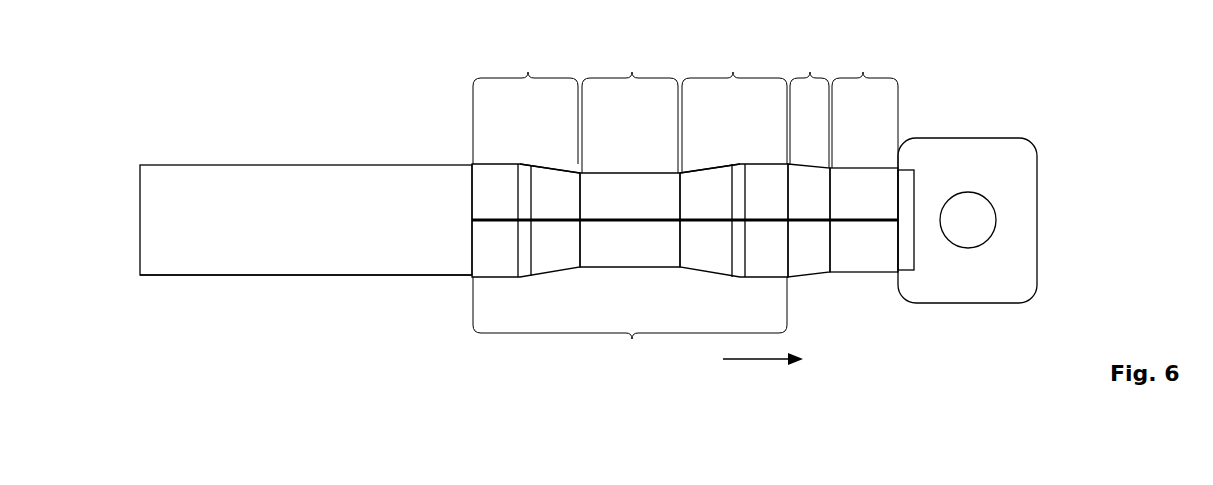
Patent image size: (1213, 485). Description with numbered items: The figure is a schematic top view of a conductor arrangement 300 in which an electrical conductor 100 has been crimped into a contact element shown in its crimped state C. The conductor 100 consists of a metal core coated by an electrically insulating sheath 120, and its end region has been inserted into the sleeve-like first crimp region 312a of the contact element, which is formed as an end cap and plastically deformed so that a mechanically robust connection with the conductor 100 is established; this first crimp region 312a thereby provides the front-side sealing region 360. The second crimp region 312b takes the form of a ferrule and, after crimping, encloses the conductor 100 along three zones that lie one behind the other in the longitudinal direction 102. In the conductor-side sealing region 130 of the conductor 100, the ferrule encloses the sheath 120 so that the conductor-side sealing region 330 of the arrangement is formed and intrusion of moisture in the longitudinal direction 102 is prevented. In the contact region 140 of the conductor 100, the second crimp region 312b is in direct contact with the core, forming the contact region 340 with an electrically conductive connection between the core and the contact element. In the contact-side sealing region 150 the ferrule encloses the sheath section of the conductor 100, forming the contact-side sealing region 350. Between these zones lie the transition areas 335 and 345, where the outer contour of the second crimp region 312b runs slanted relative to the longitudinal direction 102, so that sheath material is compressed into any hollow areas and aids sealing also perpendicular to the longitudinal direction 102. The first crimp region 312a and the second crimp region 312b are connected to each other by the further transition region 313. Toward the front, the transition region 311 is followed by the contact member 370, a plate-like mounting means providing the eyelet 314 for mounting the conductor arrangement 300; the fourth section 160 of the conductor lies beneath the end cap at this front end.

The conductor arrangement 300 is at (246, 58).
The electrical conductor 100 is at (321, 160).
The sheath 120 is at (357, 276).
The conductor-side sealing region 130 is at (526, 146).
The conductor-side sealing region 330 is at (528, 78).
The contact region 140 is at (628, 141).
The contact region 340 is at (632, 78).
The contact-side sealing region 150 is at (734, 146).
The contact-side sealing region 350 is at (733, 78).
The fourth section 160 is at (928, 159).
The front-side sealing region 360 is at (928, 159).
The first crimp region 312a is at (863, 78).
The second crimp region 312b is at (632, 340).
The further transition region 313 is at (810, 78).
The transition area 335 is at (542, 167).
The transition area 345 is at (717, 167).
The transition region 311 is at (897, 273).
The contact member 370 is at (960, 303).
The eyelet 314 is at (978, 217).
The longitudinal direction 102 is at (755, 362).
The crimped state C is at (1029, 103).